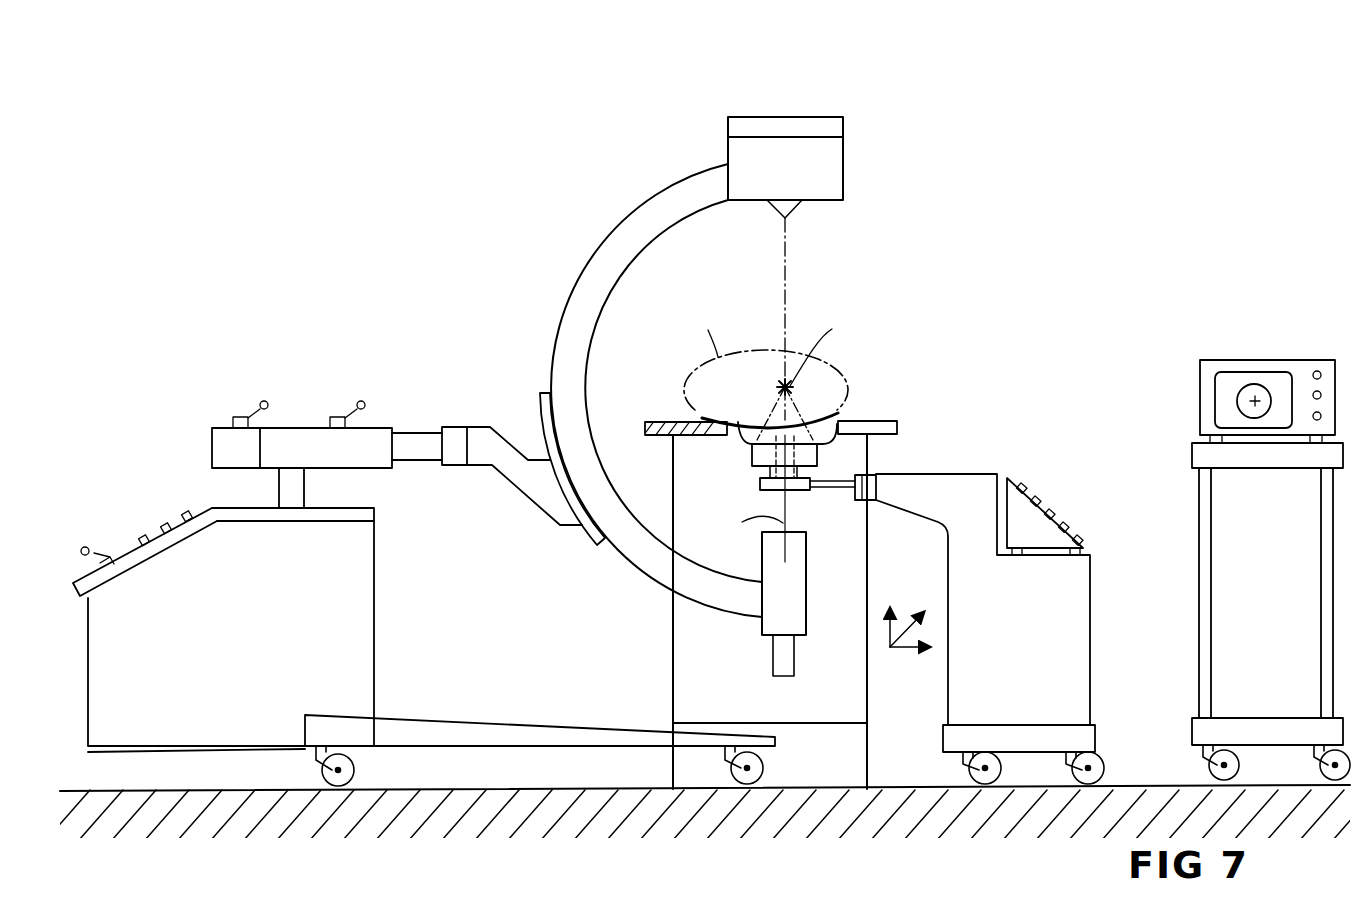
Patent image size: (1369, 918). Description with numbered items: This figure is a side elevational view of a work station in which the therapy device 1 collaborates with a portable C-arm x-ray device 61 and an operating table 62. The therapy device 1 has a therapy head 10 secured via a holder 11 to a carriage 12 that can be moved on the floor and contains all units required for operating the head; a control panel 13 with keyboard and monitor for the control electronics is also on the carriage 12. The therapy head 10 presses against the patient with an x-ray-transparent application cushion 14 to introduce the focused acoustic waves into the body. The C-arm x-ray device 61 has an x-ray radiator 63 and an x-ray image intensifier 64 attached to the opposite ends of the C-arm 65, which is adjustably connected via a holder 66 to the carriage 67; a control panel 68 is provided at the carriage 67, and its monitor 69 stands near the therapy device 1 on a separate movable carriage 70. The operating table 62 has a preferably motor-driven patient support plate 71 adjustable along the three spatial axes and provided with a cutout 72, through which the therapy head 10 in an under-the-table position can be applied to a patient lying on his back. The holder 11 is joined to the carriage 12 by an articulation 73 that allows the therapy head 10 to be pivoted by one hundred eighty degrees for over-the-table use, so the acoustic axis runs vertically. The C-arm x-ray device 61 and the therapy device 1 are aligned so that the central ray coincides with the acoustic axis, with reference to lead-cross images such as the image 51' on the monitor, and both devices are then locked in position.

The therapy device 1 is at (1070, 633).
The therapy head 10 is at (752, 452).
The holder 11 is at (845, 476).
The carriage 12 is at (1093, 697).
The control panel 13 is at (1026, 500).
The application cushion 14 is at (752, 440).
The image of the lead cross 51' is at (1246, 363).
The C-arm x-ray device 61 is at (536, 312).
The operating table 62 is at (860, 420).
The x-ray radiator 63 is at (832, 170).
The x-ray image intensifier 64 is at (806, 620).
The C-arm 65 is at (658, 204).
The holder 66 is at (441, 424).
The carriage 67 is at (380, 641).
The control panel 68 is at (137, 553).
The monitor 69 is at (1300, 362).
The movable carriage 70 is at (1193, 457).
The patient support plate 71 is at (671, 420).
The cutout 72 is at (885, 420).
The articulation 73 is at (862, 501).